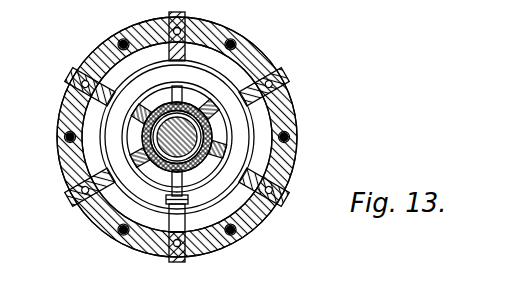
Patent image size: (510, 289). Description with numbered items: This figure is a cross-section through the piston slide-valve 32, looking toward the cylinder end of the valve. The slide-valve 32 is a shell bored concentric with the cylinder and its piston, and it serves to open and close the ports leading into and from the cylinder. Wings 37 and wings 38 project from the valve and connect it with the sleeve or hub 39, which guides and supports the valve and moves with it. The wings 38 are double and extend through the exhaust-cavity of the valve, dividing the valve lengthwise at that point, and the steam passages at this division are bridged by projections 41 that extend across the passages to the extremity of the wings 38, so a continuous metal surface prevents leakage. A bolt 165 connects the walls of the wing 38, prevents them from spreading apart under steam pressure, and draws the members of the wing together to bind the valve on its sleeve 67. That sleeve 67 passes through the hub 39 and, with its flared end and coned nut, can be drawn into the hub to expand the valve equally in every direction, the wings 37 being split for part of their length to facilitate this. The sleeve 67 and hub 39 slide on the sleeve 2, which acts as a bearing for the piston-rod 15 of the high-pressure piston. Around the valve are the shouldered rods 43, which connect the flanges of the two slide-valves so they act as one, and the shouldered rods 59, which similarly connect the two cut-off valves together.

The sleeve 2 is at (207, 123).
The piston-rod 15 is at (197, 116).
The piston slide-valve 32 is at (223, 143).
The wing 37 is at (179, 131).
The double wing 38 is at (183, 179).
The sleeve or hub 39 is at (150, 142).
The projection 41 is at (186, 215).
The shouldered rod 43 is at (121, 41).
The shouldered rod 59 is at (233, 41).
The sleeve 67 is at (160, 134).
The bolt 165 is at (168, 199).